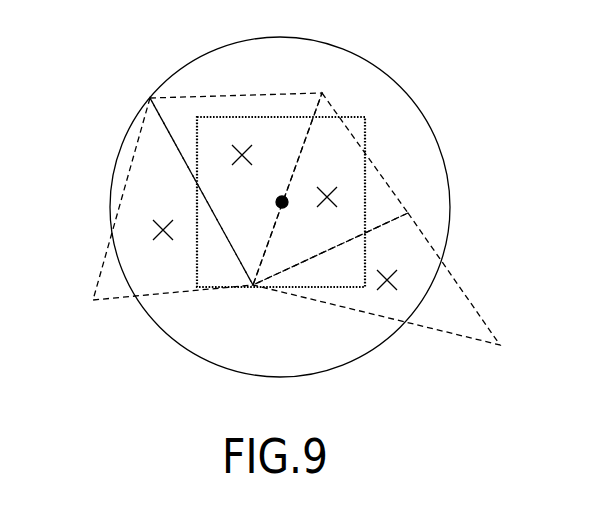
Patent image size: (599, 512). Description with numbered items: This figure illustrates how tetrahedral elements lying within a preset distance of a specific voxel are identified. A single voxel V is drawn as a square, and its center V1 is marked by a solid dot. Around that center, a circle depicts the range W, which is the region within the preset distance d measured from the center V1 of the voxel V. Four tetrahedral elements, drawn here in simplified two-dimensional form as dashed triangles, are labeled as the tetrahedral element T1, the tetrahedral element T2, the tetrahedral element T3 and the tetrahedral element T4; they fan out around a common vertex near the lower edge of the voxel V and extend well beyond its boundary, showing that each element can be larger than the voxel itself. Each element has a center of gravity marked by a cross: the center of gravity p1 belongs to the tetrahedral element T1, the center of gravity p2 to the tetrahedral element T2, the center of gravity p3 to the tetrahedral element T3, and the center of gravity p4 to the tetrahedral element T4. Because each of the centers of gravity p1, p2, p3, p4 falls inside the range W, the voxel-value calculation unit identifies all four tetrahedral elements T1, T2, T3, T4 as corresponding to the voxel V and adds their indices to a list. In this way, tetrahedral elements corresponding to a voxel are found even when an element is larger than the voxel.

The range W is at (410, 97).
The voxel V is at (210, 117).
The center of voxel V1 is at (282, 208).
The tetrahedral element T1 is at (457, 282).
The tetrahedral element T2 is at (375, 163).
The tetrahedral element T3 is at (303, 92).
The tetrahedral element T4 is at (103, 263).
The center of gravity p1 is at (387, 293).
The center of gravity p2 is at (327, 209).
The center of gravity p3 is at (243, 167).
The center of gravity p4 is at (163, 242).